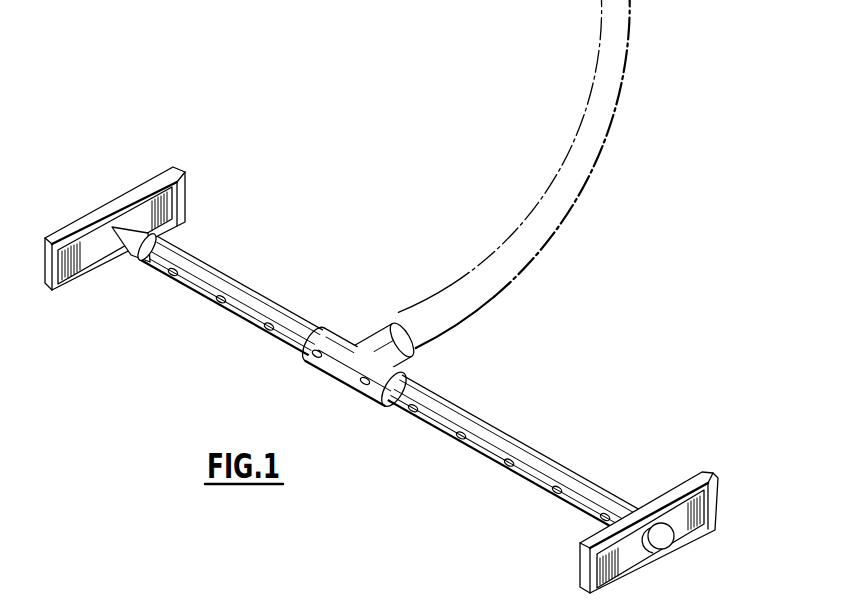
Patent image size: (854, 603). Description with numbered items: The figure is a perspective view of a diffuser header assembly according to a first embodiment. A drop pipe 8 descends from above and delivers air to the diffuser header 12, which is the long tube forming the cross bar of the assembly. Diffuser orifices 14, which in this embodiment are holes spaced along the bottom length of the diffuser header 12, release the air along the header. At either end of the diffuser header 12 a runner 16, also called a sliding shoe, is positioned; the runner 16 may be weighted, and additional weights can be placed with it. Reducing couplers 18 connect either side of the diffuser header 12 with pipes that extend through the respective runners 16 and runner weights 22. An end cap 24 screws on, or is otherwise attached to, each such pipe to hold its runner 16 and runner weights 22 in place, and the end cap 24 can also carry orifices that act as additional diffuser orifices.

The drop pipe 8 is at (543, 222).
The diffuser header 12 is at (216, 282).
The diffuser orifices 14 is at (263, 328).
The runner 16 is at (147, 183).
The reducing coupler 18 is at (130, 257).
The runner weight 22 is at (703, 518).
The end cap 24 is at (663, 545).